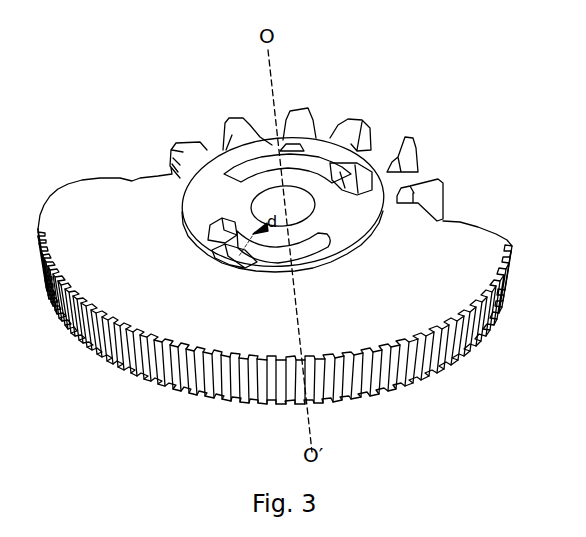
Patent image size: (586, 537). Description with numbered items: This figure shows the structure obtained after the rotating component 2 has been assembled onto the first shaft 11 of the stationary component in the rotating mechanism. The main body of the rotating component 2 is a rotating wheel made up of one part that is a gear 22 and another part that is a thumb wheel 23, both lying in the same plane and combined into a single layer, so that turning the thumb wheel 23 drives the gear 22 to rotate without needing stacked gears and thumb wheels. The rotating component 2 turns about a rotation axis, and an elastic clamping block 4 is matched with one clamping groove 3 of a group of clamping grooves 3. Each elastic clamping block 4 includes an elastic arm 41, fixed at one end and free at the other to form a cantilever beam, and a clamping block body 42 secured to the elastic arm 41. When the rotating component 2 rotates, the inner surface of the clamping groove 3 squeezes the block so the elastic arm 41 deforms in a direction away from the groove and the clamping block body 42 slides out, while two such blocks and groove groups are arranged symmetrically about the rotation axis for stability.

The rotating component 2 is at (470, 245).
The gear 22 is at (357, 117).
The thumb wheel 23 is at (323, 313).
The clamping groove 3 is at (234, 254).
The first shaft 11 is at (219, 197).
The elastic clamping block 4 is at (336, 62).
The elastic arm 41 is at (290, 153).
The clamping block body 42 is at (312, 148).